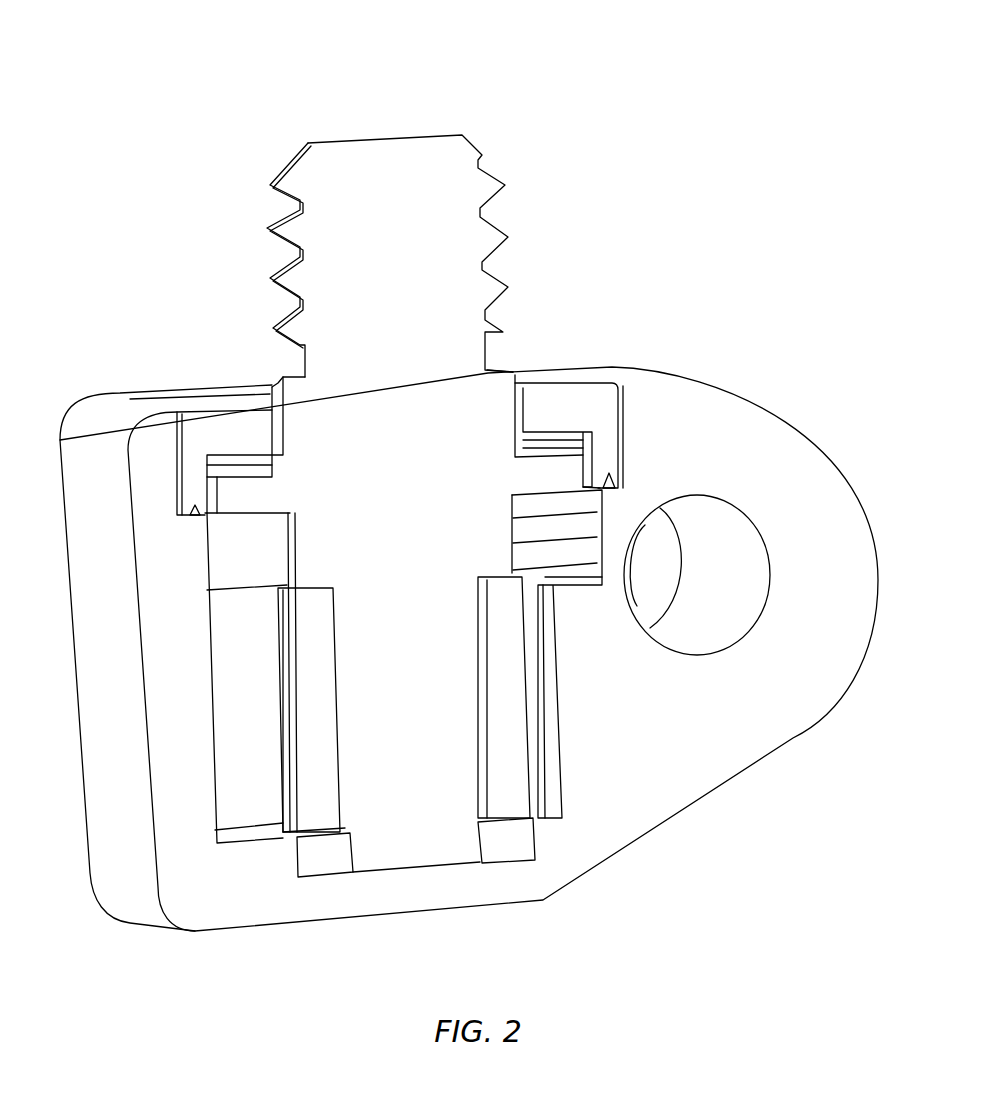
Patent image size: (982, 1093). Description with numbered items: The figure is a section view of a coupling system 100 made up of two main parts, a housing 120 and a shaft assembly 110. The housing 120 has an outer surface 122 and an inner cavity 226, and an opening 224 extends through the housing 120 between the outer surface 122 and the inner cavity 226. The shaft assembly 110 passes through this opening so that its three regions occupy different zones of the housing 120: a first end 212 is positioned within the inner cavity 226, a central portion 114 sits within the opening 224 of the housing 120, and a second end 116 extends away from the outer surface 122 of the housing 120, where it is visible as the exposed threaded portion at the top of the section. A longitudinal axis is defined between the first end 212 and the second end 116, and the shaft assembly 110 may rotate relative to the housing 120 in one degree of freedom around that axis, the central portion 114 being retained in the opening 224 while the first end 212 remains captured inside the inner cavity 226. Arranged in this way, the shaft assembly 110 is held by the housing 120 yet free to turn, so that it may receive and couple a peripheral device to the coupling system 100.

The coupling system 100 is at (258, 80).
The shaft assembly 110 is at (386, 91).
The central portion 114 is at (500, 380).
The second end 116 is at (493, 177).
The housing 120 is at (797, 333).
The outer surface 122 is at (667, 395).
The first end 212 is at (357, 727).
The opening 224 is at (270, 382).
The inner cavity 226 is at (550, 778).